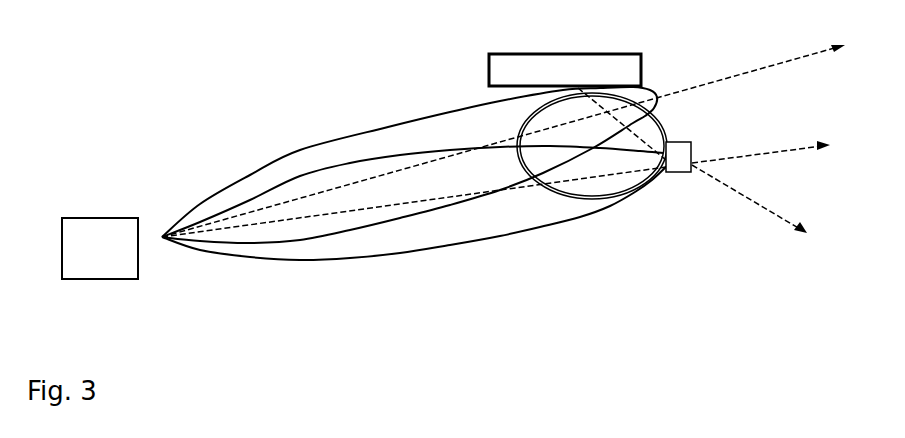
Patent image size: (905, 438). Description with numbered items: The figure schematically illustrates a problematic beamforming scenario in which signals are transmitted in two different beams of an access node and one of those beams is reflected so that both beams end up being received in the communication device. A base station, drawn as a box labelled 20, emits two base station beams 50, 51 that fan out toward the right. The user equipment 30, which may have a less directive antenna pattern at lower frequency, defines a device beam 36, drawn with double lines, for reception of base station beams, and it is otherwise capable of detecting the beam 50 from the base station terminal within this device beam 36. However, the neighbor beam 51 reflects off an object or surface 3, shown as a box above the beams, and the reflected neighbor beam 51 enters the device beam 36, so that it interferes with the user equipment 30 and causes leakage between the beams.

The object or surface 3 is at (552, 58).
The light source 20 is at (86, 260).
The user equipment 30 is at (692, 143).
The device beam 36 is at (595, 198).
The base station beam 50 is at (288, 175).
The neighbor beam 51 is at (388, 127).